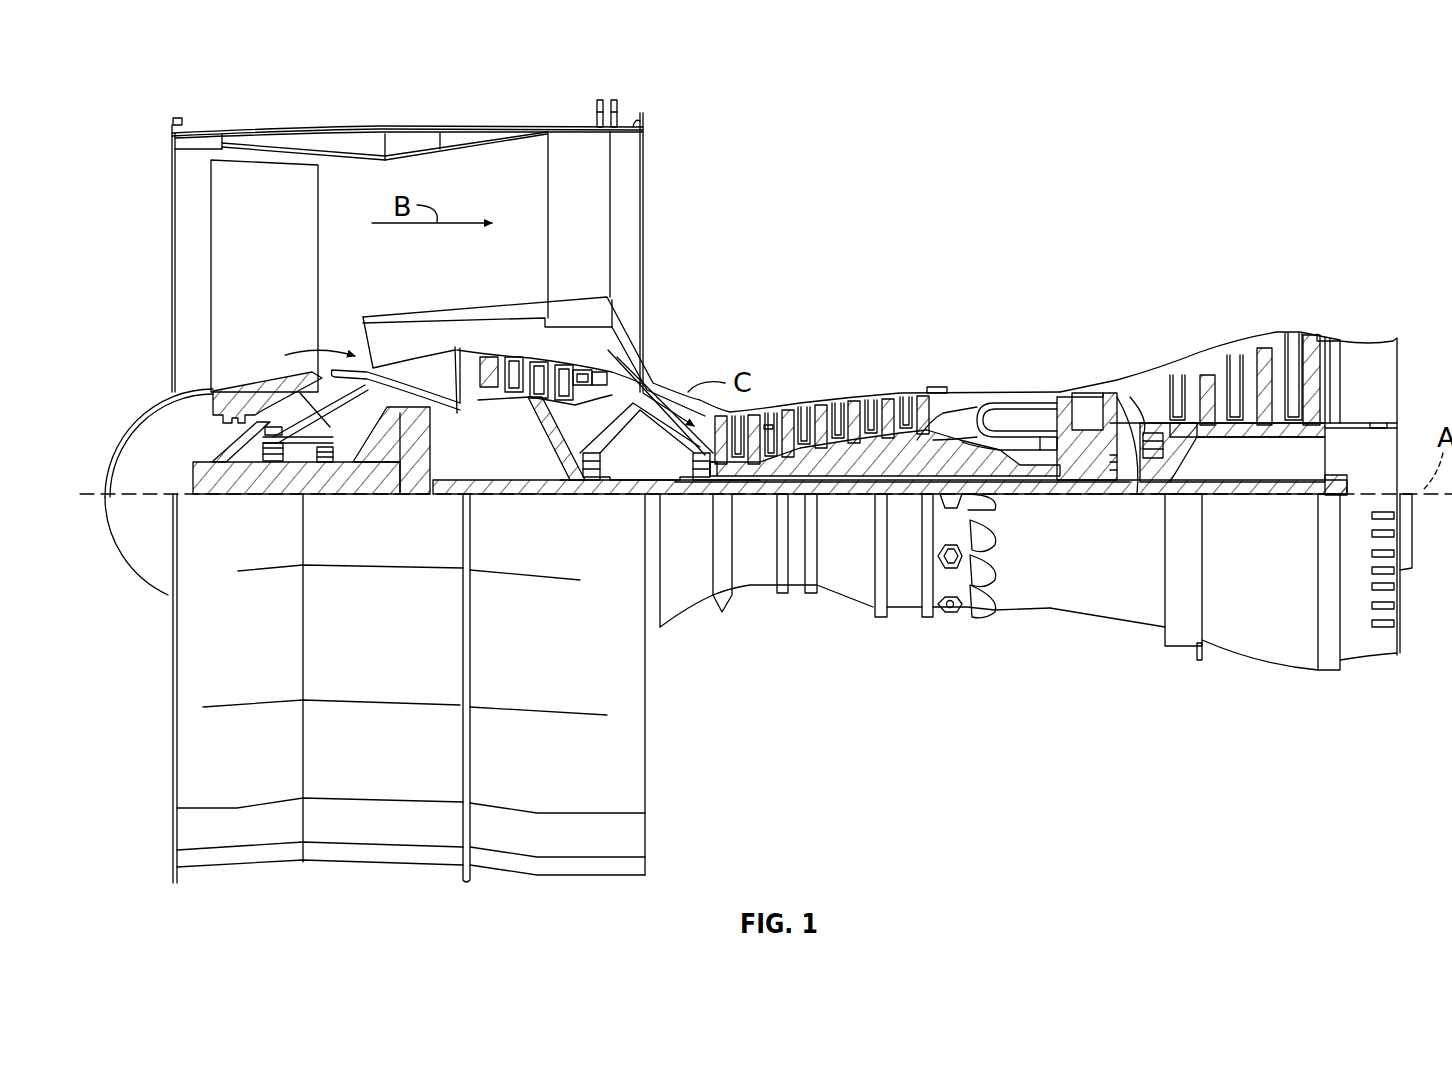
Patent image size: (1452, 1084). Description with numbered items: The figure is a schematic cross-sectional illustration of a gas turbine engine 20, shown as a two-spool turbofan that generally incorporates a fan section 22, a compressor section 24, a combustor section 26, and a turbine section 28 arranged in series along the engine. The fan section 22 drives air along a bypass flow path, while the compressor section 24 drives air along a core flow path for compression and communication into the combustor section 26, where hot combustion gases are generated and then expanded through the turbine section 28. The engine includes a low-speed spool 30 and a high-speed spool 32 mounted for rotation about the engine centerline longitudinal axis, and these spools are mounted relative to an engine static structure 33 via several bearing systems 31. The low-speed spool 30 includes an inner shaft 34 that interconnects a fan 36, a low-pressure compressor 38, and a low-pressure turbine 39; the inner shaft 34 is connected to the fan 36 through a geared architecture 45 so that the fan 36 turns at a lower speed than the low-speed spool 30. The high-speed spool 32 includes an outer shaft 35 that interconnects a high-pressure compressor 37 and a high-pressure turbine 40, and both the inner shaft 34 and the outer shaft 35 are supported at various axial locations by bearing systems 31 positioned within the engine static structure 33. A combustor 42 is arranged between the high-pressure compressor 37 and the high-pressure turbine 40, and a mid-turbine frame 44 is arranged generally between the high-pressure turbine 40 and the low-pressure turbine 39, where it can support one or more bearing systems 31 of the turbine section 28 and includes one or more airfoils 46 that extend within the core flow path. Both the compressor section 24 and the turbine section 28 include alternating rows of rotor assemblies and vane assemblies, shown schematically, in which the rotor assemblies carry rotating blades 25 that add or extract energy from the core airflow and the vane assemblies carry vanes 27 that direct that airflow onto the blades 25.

The gas turbine engine 20 is at (1222, 162).
The fan section 22 is at (372, 97).
The compressor section 24 is at (840, 350).
The blades 25 is at (490, 355).
The combustor section 26 is at (1000, 338).
The vanes 27 is at (515, 360).
The turbine section 28 is at (1358, 235).
The low-speed spool 30 is at (865, 503).
The bearing systems 31 is at (290, 450).
The high-speed spool 32 is at (917, 440).
The engine static structure 33 is at (905, 615).
The inner shaft 34 is at (660, 487).
The outer shaft 35 is at (1020, 493).
The fan 36 is at (291, 258).
The high-pressure compressor 37 is at (783, 423).
The low-pressure compressor 38 is at (555, 360).
The low-pressure turbine 39 is at (1258, 348).
The high-pressure turbine 40 is at (1083, 393).
The combustor 42 is at (1010, 412).
The mid-turbine frame 44 is at (1152, 435).
The geared architecture 45 is at (420, 470).
The airfoils 46 is at (1130, 407).